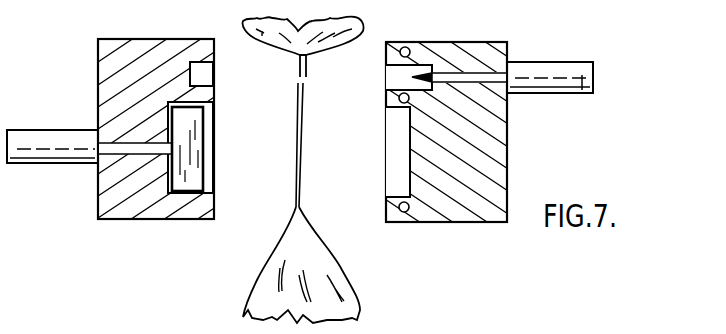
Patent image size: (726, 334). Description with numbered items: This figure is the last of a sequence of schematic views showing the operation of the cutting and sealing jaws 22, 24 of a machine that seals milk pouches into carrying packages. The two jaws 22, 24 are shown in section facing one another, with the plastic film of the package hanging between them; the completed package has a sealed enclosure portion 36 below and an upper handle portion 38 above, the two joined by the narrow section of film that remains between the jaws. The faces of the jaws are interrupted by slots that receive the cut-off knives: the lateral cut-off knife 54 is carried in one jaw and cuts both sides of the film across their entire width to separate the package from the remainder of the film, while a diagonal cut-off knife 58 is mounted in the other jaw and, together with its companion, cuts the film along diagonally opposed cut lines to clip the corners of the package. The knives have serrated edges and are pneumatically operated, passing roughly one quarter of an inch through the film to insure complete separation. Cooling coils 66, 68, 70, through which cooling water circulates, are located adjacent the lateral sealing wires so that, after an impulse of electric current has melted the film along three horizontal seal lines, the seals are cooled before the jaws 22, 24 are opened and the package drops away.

The cutting and sealing jaw 22 is at (508, 147).
The cutting and sealing jaw 24 is at (98, 73).
The sealed enclosure portion 36 is at (250, 280).
The upper handle portion 38 is at (296, 119).
The lateral cut-off knife 54 is at (412, 77).
The diagonal cut-off knife 58 is at (203, 163).
The cooling coil 66 is at (407, 47).
The cooling coil 68 is at (399, 100).
The cooling coil 70 is at (407, 212).